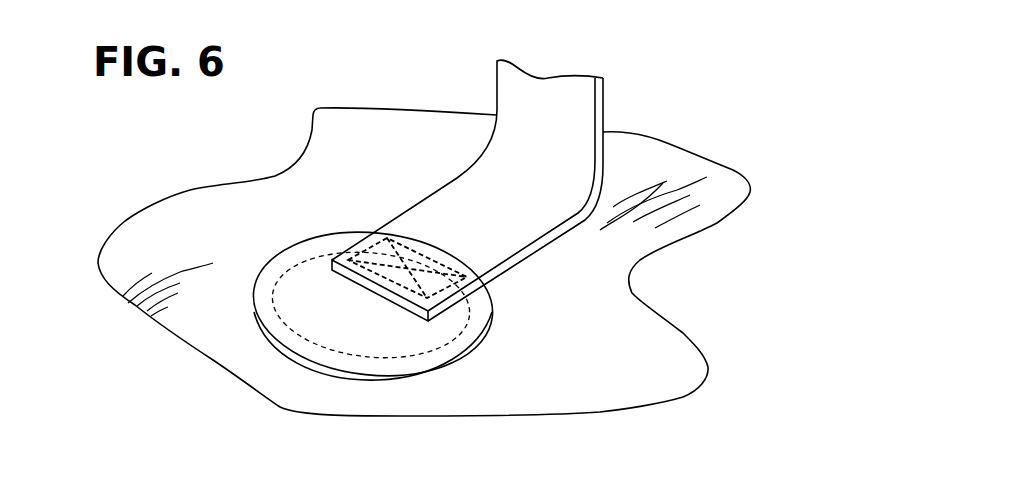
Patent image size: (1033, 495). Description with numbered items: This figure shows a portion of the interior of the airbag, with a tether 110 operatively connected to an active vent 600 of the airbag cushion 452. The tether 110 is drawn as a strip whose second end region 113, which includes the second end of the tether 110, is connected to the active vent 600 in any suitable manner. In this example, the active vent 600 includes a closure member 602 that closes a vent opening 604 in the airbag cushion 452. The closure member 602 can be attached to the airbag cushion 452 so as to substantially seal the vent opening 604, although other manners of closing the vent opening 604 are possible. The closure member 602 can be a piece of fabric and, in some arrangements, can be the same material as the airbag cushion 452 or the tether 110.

The tether 110 is at (513, 95).
The second end region 113 is at (440, 166).
The airbag cushion 452 is at (657, 158).
The active vent 600 is at (346, 270).
The closure member 602 is at (480, 310).
The vent opening 604 is at (282, 248).